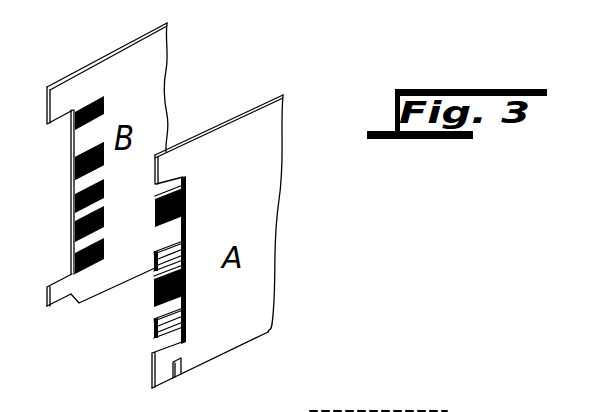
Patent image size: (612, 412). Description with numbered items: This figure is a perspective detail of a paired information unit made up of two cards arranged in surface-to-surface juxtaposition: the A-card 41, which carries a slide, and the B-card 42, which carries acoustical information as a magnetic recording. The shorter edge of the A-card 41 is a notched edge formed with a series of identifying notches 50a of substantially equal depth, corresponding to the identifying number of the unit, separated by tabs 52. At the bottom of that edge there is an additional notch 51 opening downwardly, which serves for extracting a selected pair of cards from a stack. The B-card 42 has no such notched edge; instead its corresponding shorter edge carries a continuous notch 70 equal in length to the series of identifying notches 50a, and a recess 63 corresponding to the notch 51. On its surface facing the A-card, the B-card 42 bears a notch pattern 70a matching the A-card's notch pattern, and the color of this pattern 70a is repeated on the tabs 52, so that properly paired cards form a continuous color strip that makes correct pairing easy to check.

The card 41 is at (248, 343).
The card 42 is at (167, 101).
The identifying notches 50a is at (183, 223).
The notch 51 is at (177, 378).
The tabs 52 is at (151, 308).
The recess 63 is at (75, 300).
The continuous notch 70 is at (41, 128).
The notch pattern 70a is at (106, 85).